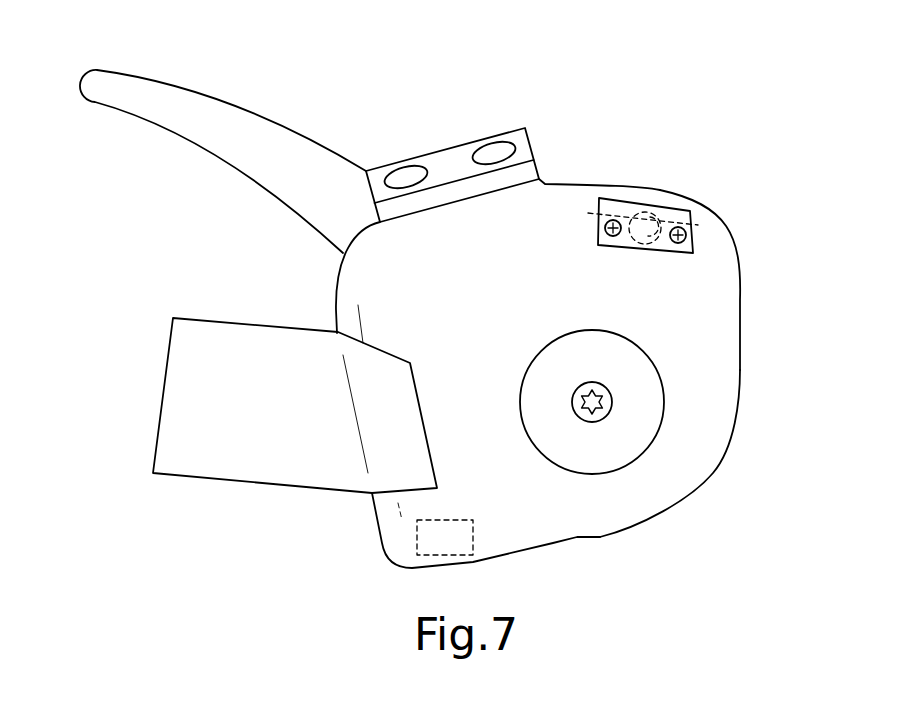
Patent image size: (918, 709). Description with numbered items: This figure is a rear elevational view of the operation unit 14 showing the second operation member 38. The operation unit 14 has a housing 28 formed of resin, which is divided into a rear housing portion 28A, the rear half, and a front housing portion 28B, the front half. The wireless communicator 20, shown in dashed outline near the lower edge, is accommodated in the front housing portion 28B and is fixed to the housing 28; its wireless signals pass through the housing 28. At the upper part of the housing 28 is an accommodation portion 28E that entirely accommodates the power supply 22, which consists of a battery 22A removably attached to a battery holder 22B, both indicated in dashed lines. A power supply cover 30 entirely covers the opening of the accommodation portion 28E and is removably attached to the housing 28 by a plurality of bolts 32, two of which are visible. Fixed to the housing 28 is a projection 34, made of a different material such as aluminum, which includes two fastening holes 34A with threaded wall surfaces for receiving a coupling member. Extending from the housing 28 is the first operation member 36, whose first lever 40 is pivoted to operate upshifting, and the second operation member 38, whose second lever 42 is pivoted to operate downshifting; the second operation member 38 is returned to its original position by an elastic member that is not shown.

The operation unit 14 is at (789, 111).
The wireless communicator 20 is at (417, 537).
The power supply 22 is at (579, 137).
The battery 22A is at (625, 198).
The battery holder 22B is at (665, 200).
The housing 28 is at (815, 333).
The rear housing portion 28A is at (715, 330).
The front housing portion 28B is at (712, 398).
The accommodation portion 28E is at (688, 216).
The power supply cover 30 is at (598, 243).
The bolts 32 is at (613, 248).
The projection 34 is at (463, 203).
The fastening holes 34A is at (417, 170).
The first operation member 36 is at (82, 63).
The second operation member 38 is at (167, 300).
The first lever 40 is at (237, 117).
The second lever 42 is at (232, 462).